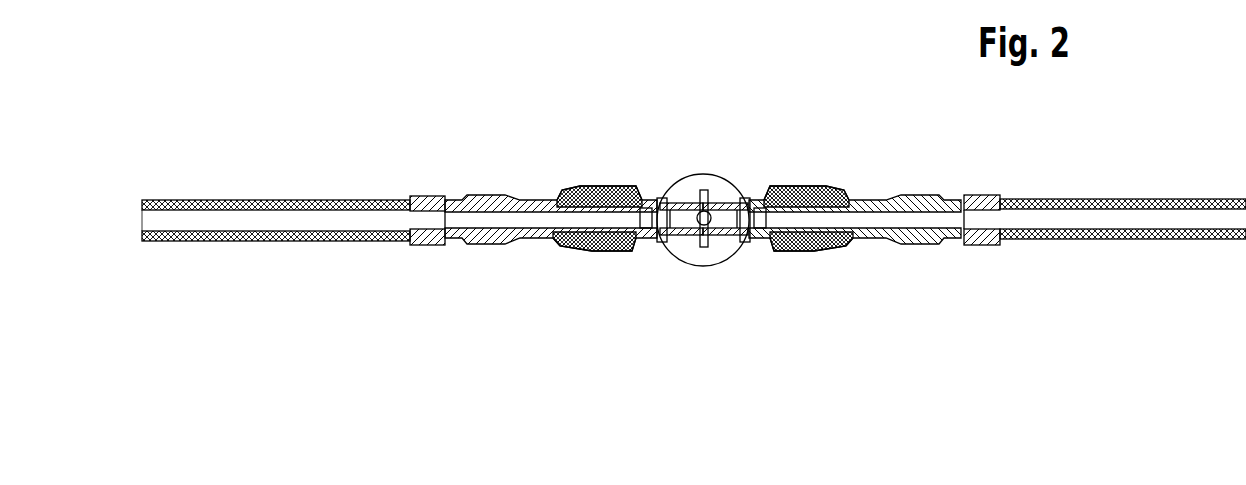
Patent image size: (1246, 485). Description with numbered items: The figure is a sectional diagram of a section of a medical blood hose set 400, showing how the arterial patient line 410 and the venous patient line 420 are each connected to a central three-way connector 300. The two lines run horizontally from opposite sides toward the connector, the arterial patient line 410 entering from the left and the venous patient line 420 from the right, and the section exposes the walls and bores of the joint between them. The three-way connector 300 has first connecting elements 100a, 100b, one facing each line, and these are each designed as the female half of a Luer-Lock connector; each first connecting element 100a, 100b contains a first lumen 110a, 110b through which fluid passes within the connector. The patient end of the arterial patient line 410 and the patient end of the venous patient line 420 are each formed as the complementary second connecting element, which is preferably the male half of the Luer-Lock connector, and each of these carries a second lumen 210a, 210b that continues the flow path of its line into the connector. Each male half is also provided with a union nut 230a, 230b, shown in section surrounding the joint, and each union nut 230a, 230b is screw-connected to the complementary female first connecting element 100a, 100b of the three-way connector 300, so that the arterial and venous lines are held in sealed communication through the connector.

The tube assembly 400 is at (318, 105).
The arterial patient line 410 is at (290, 242).
The venous patient line 420 is at (1128, 199).
The second lumen 210a is at (515, 242).
The second lumen 210b is at (887, 242).
The union nut 230a is at (604, 250).
The union nut 230b is at (803, 250).
The first lumen 110a is at (653, 222).
The first lumen 110b is at (756, 222).
The first connecting element 100a is at (662, 187).
The first connecting element 100b is at (757, 187).
The three-way connector 300 is at (726, 178).